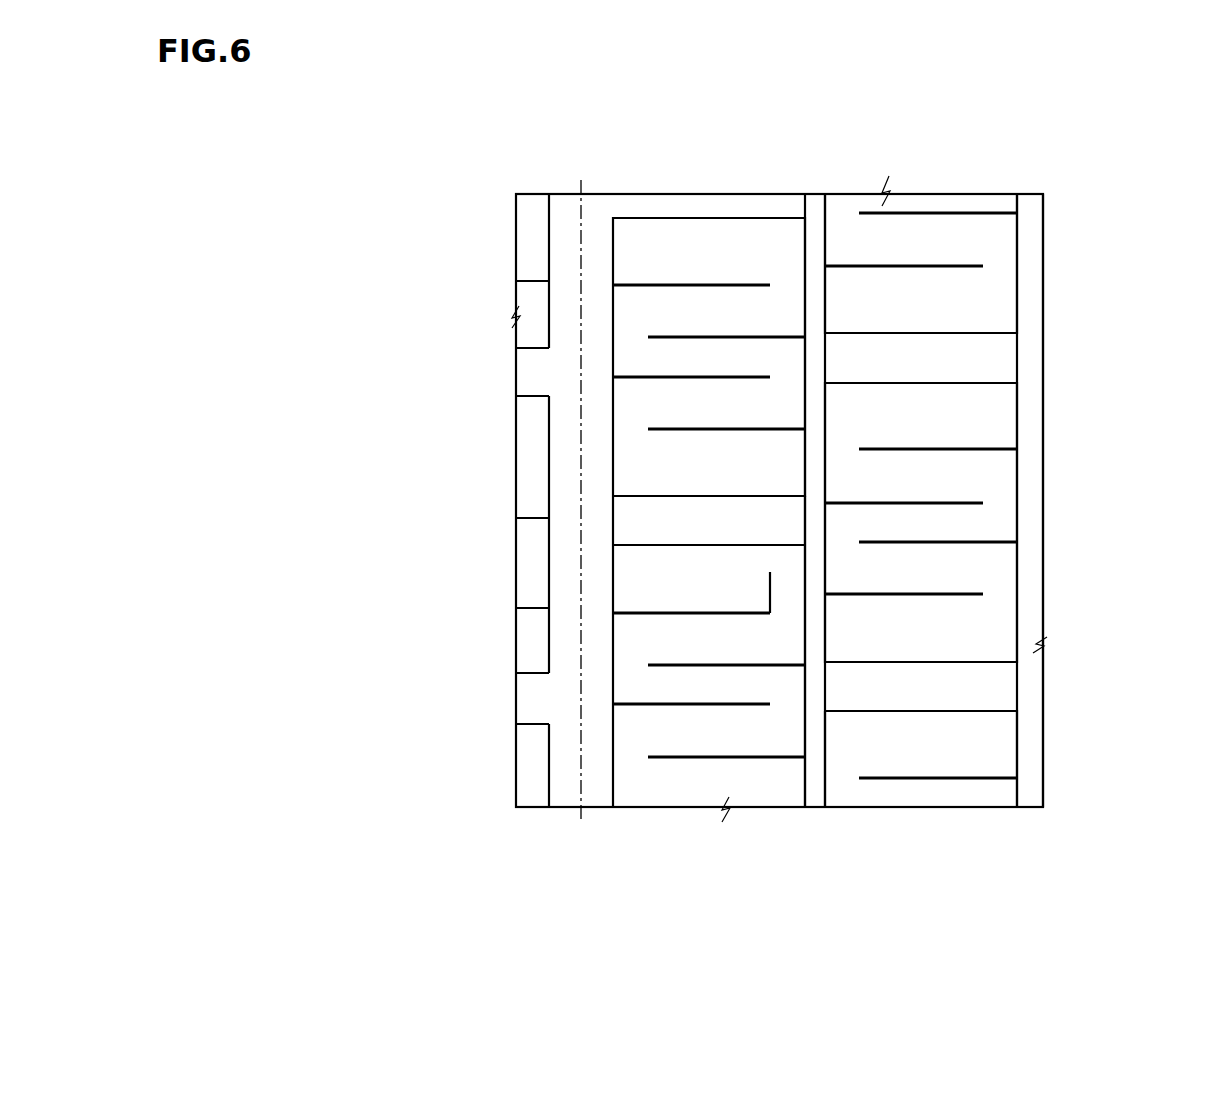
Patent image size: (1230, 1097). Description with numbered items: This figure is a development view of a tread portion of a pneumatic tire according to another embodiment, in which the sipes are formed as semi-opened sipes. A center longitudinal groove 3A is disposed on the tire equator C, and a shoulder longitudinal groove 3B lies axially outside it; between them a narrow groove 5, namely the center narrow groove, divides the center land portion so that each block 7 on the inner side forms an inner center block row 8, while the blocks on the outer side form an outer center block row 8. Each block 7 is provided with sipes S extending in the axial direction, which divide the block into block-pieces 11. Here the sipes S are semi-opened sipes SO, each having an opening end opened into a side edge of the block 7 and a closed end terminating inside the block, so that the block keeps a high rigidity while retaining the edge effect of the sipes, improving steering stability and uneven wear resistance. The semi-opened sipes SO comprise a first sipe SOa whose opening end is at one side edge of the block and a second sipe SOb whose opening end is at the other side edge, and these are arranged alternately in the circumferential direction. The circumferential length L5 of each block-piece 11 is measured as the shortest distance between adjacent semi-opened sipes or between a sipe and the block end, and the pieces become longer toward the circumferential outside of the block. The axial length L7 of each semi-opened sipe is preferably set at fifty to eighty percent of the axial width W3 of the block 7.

The center longitudinal groove 3A is at (568, 762).
The shoulder longitudinal groove 3B is at (1037, 762).
The narrow groove 5 is at (818, 762).
The block 7 is at (660, 456).
The block row 8 is at (745, 232).
The block-piece 11 is at (626, 248).
The sipe S is at (330, 243).
The semi-opened sipe SO is at (632, 285).
The first sipe SOa is at (632, 613).
The second sipe SOb is at (660, 665).
The tire equator C is at (580, 489).
The circumferential length of block-piece L5 is at (712, 218).
The axial width of block W3 is at (613, 522).
The axial length of semi-opened sipe L7 is at (613, 572).